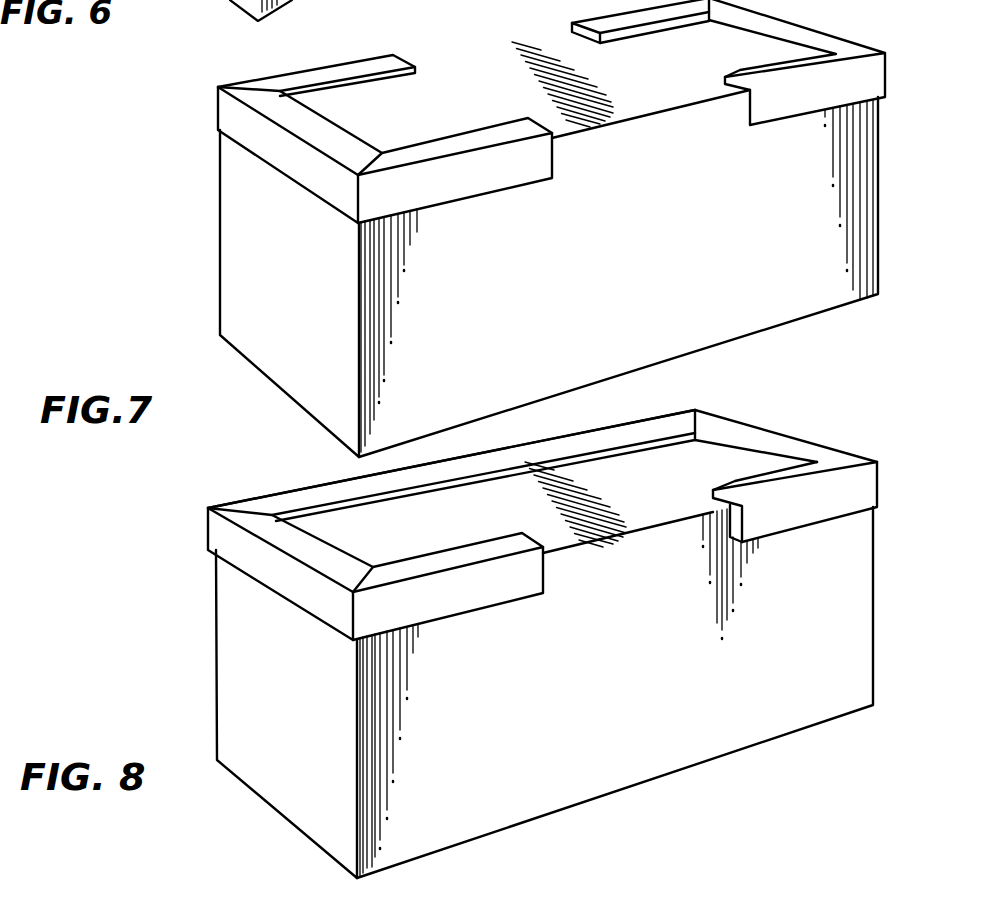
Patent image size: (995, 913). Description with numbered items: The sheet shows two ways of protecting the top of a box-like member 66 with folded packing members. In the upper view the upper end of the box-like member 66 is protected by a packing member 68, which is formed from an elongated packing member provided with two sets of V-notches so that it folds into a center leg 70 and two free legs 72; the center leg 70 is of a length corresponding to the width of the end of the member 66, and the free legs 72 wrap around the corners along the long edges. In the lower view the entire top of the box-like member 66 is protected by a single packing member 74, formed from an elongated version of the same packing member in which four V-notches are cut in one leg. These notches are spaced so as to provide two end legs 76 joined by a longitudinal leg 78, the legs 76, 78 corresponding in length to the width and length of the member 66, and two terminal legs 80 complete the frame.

In FIG. 7, the box-like member 66 is at (291, 277).
In FIG. 8, the box-like member 66 is at (465, 636).
In FIG. 7, the packing member 68 is at (325, 64).
In FIG. 7, the center leg 70 is at (308, 177).
In FIG. 7, the free legs 72 is at (368, 62).
In FIG. 8, the single packing member 74 is at (565, 435).
In FIG. 8, the end legs 76 is at (307, 590).
In FIG. 8, the longitudinal leg 78 is at (477, 453).
In FIG. 8, the terminal legs 80 is at (505, 511).